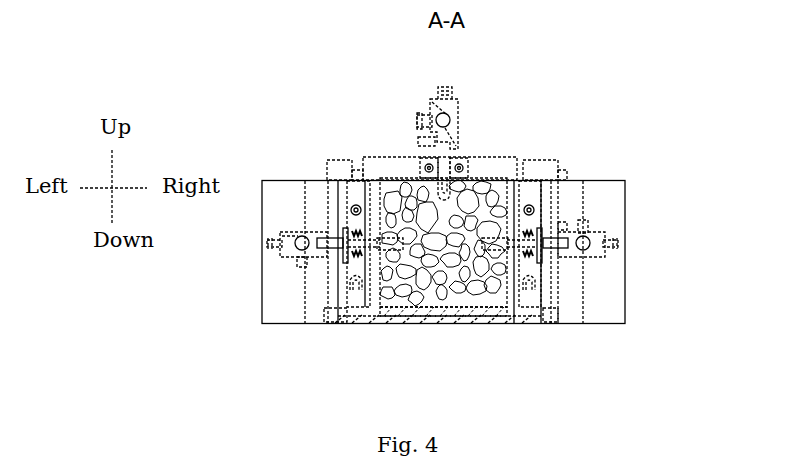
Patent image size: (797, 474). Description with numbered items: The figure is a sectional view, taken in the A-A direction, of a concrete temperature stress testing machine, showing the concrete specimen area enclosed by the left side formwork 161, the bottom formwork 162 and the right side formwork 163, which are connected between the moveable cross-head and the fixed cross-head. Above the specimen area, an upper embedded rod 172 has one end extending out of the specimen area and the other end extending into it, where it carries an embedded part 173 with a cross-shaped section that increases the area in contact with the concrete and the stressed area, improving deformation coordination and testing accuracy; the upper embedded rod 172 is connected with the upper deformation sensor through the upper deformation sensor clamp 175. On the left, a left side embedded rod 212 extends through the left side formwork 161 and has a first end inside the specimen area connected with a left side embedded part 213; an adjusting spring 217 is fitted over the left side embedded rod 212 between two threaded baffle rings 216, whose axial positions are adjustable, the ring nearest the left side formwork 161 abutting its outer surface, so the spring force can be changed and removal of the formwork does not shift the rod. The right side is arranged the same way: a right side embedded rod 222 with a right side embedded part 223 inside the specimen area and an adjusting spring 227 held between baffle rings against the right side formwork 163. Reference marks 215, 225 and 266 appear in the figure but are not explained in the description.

The left side formwork 161 is at (334, 339).
The bottom formwork 162 is at (442, 353).
The right side formwork 163 is at (600, 281).
The upper embedded rod 172 is at (416, 140).
The embedded part 173 is at (519, 135).
The upper deformation sensor clamp 175 is at (475, 101).
The left side embedded rod 212 is at (248, 302).
The left side embedded part 213 is at (406, 205).
The left rod end 215 is at (204, 275).
The threaded baffle ring 216 is at (305, 214).
The adjusting spring 217 is at (315, 315).
The right side embedded rod 222 is at (626, 266).
The right side embedded part 223 is at (439, 356).
The right rod end 225 is at (641, 171).
The adjusting spring 227 is at (560, 177).
The right pressure plate 266 is at (531, 263).